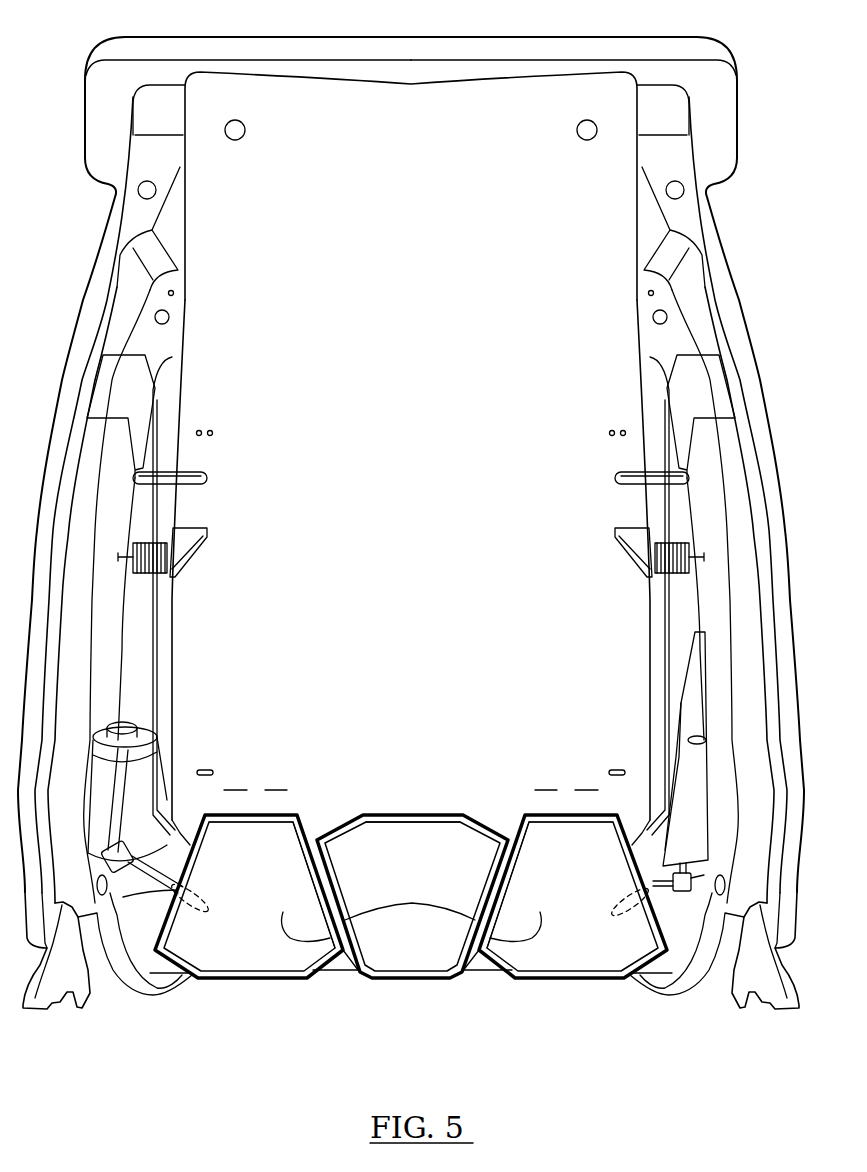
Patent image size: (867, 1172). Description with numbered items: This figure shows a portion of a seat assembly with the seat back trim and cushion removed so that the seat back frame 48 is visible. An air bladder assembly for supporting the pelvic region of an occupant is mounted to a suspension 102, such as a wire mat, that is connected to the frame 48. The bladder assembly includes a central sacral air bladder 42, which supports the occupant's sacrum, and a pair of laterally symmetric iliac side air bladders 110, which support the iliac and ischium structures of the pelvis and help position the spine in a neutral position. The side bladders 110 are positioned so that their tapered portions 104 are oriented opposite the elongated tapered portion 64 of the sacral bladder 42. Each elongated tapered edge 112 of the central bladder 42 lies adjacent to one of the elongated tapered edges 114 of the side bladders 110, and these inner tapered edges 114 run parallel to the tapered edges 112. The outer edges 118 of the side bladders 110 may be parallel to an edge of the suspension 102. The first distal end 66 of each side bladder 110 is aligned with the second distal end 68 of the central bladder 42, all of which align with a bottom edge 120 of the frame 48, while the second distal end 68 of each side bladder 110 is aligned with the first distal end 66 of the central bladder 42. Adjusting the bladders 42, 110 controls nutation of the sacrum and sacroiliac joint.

The central sacral air bladder 42 is at (432, 852).
The seat back frame 48 is at (710, 987).
The elongated tapered portion 64 is at (428, 952).
The first distal end 66 is at (412, 813).
The second distal end 68 is at (247, 822).
The suspension 102 is at (258, 608).
The tapered portions 104 is at (290, 843).
The side air bladders 110 is at (258, 848).
The elongated tapered edges 112 is at (412, 903).
The elongated tapered edges 114 is at (412, 917).
The outer edges 118 is at (197, 857).
The bottom edge 120 is at (313, 975).